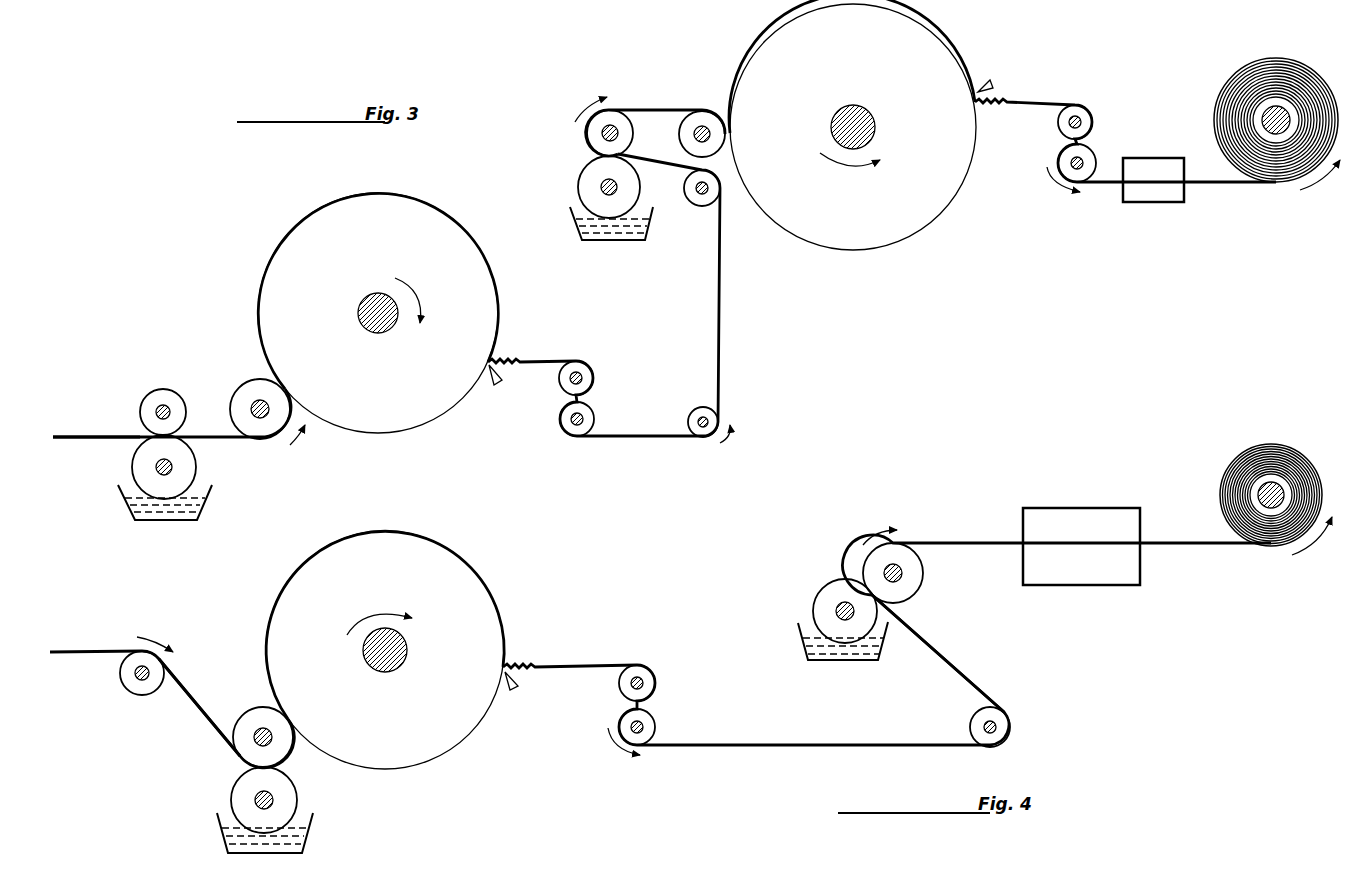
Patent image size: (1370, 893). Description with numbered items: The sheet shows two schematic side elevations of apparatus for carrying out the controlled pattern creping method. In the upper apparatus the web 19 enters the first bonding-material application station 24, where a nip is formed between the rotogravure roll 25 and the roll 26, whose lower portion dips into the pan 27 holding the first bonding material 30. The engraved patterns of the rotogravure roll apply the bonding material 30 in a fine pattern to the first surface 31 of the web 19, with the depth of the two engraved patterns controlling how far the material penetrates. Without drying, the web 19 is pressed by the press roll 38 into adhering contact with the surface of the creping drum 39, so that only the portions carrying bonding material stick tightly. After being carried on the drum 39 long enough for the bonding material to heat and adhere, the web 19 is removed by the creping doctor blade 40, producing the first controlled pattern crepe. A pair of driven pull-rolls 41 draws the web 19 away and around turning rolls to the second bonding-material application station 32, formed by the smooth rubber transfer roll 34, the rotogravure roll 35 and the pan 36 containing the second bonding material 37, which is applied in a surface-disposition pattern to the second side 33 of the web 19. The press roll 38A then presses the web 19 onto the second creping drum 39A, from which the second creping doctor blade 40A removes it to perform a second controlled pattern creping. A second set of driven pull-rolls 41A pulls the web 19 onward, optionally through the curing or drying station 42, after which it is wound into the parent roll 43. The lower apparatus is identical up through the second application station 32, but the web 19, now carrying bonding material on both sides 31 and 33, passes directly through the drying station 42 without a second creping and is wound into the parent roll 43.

In FIG. 3, the web 19 is at (94, 436).
In FIG. 4, the web 19 is at (122, 648).
In FIG. 3, the first bonding-material application station 24 is at (182, 545).
In FIG. 4, the first bonding-material application station 24 is at (306, 868).
In FIG. 3, the rotogravure roll 25 is at (160, 397).
In FIG. 4, the rotogravure roll 25 is at (256, 718).
In FIG. 3, the patterned metal rotogravure roll 26 is at (190, 465).
In FIG. 4, the patterned metal rotogravure roll 26 is at (243, 786).
In FIG. 3, the pan 27 is at (166, 516).
In FIG. 4, the pan 27 is at (257, 830).
In FIG. 3, the first bonding material 30 is at (203, 508).
In FIG. 4, the first bonding material 30 is at (305, 827).
In FIG. 3, the first surface of the web 31 is at (110, 439).
In FIG. 4, the first surface of the web 31 is at (195, 703).
In FIG. 3, the second bonding-material application station 32 is at (628, 284).
In FIG. 4, the second bonding-material application station 32 is at (828, 689).
In FIG. 3, the second side of the web 33 is at (718, 310).
In FIG. 4, the second side of the web 33 is at (960, 678).
In FIG. 3, the smooth rubber transfer roll 34 is at (590, 136).
In FIG. 4, the smooth rubber transfer roll 34 is at (915, 568).
In FIG. 3, the rotogravure roll 35 is at (593, 178).
In FIG. 4, the rotogravure roll 35 is at (828, 598).
In FIG. 3, the pan 36 is at (608, 232).
In FIG. 4, the pan 36 is at (826, 649).
In FIG. 3, the second bonding material 37 is at (648, 232).
In FIG. 4, the second bonding material 37 is at (880, 652).
In FIG. 3, the press roll 38 is at (250, 390).
In FIG. 3, the press roll 38A is at (706, 118).
In FIG. 3, the creping drum 39 is at (417, 410).
In FIG. 4, the creping drum 39 is at (450, 730).
In FIG. 3, the second creping drum 39A is at (880, 226).
In FIG. 3, the creping doctor blade 40 is at (497, 383).
In FIG. 4, the creping doctor blade 40 is at (514, 688).
In FIG. 3, the second creping doctor blade 40A is at (990, 84).
In FIG. 3, the driven pull-rolls 41 is at (590, 466).
In FIG. 4, the driven pull-rolls 41 is at (706, 774).
In FIG. 3, the second set of driven pull-rolls 41A is at (1086, 243).
In FIG. 3, the curing or drying station 42 is at (1155, 157).
In FIG. 4, the curing or drying station 42 is at (1080, 517).
In FIG. 3, the parent roll 43 is at (1270, 70).
In FIG. 4, the parent roll 43 is at (1258, 455).